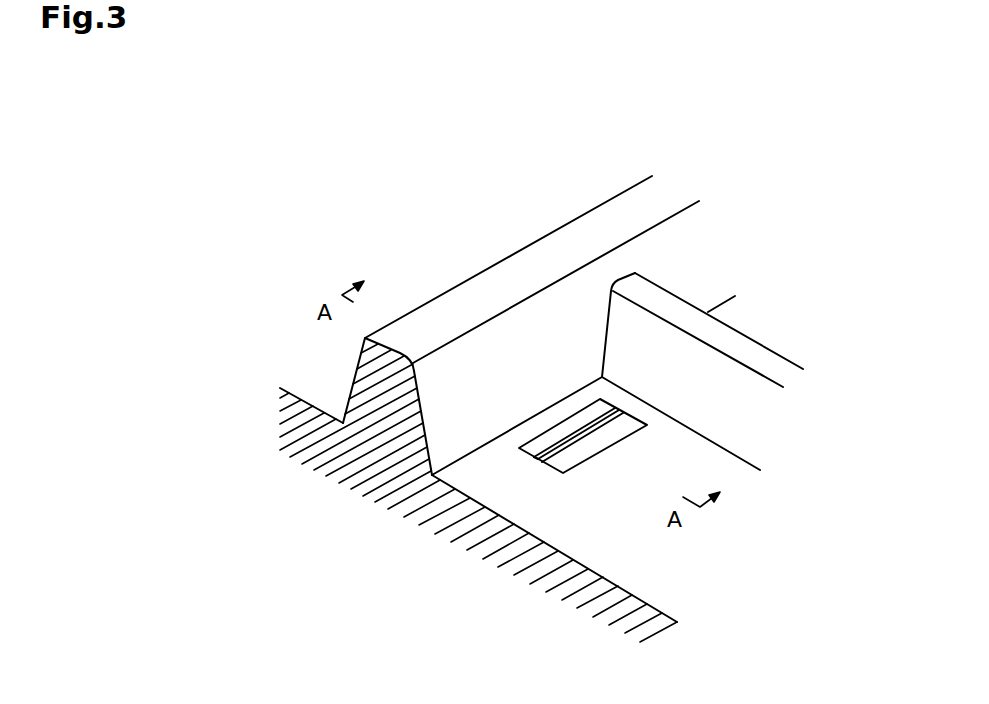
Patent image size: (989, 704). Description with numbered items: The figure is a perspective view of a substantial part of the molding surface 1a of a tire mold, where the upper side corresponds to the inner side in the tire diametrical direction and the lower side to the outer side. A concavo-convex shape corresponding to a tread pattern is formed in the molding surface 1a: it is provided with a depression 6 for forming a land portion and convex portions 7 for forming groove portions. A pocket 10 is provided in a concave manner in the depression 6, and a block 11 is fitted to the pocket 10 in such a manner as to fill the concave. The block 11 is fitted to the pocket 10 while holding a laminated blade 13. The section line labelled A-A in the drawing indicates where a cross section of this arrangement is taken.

The molding surface 1a is at (757, 324).
The depression 6 is at (326, 398).
The convex portion 7 is at (523, 251).
The pocket 10 is at (636, 429).
The block 11 is at (583, 447).
The laminated blade 13 is at (588, 432).